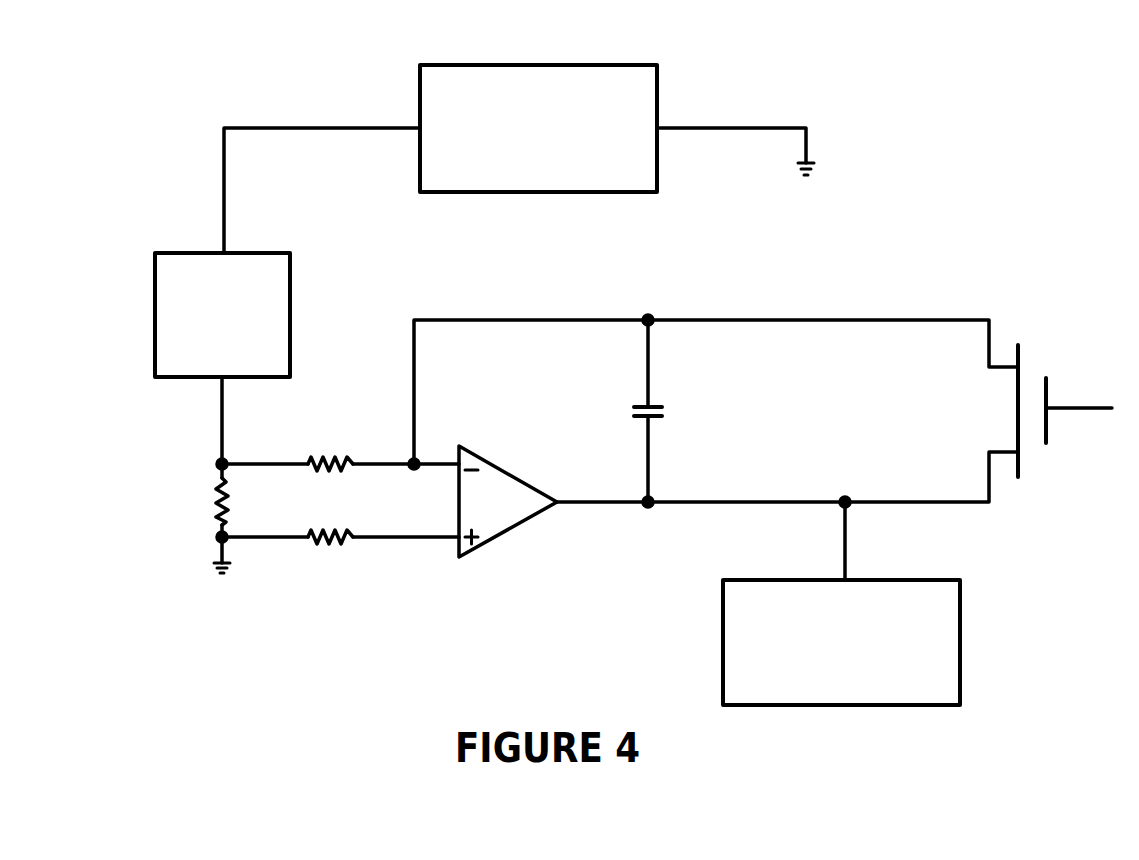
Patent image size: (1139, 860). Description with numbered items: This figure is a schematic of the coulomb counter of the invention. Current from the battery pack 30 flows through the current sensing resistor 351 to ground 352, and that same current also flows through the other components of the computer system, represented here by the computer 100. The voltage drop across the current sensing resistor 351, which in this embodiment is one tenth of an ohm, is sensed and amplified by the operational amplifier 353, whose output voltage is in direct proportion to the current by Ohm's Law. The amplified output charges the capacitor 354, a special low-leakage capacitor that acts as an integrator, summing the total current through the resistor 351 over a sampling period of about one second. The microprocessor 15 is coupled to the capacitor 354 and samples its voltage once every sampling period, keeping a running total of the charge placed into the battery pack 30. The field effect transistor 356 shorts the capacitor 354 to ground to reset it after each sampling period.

The computer 100 is at (580, 65).
The battery pack 30 is at (240, 252).
The current sensing resistor 351 is at (215, 501).
The ground 352 is at (228, 567).
The operational amplifier 353 is at (516, 478).
The capacitor 354 is at (660, 407).
The field effect transistor 356 is at (1048, 393).
The microprocessor 15 is at (885, 580).